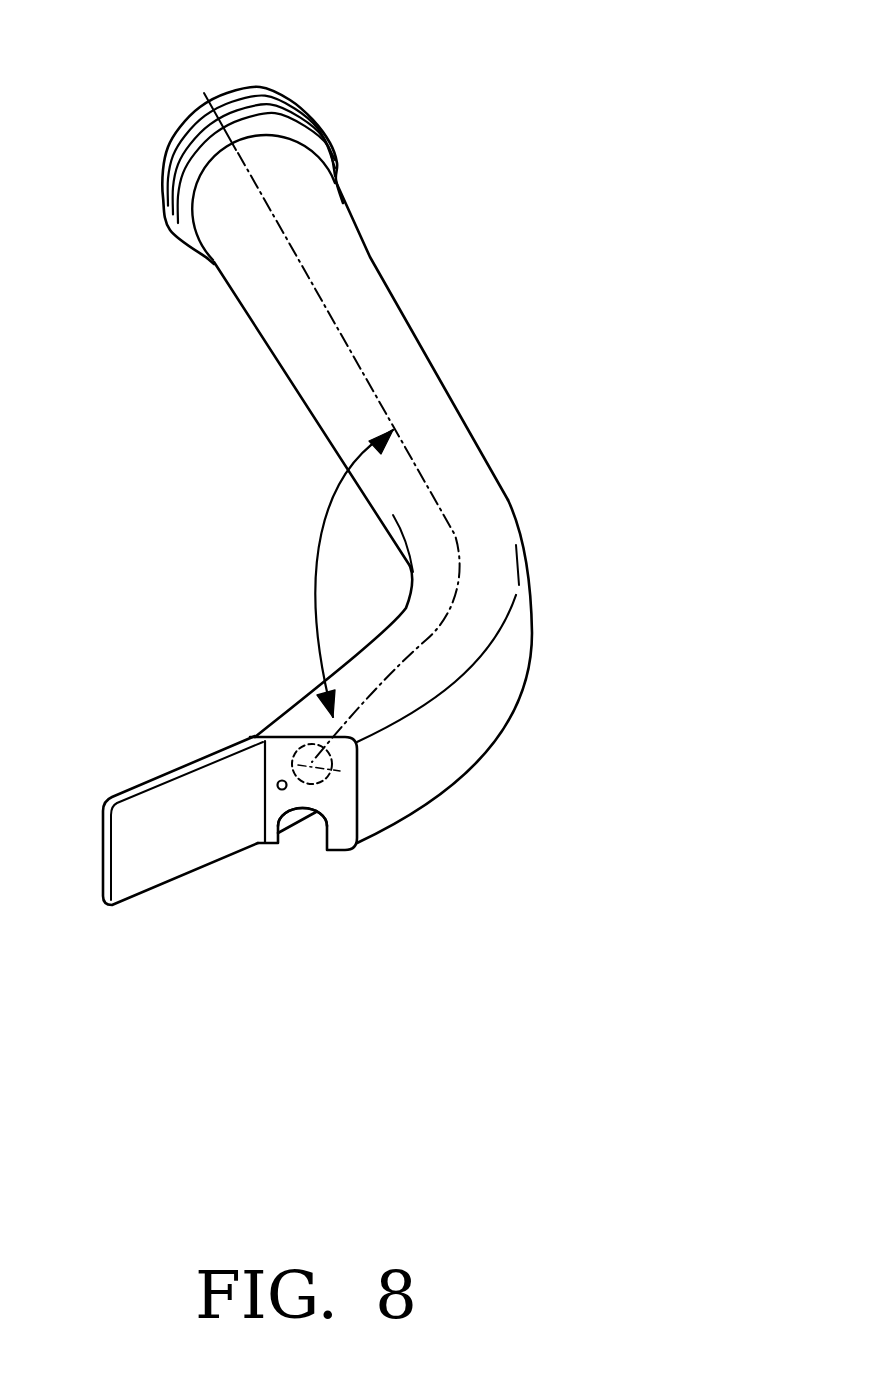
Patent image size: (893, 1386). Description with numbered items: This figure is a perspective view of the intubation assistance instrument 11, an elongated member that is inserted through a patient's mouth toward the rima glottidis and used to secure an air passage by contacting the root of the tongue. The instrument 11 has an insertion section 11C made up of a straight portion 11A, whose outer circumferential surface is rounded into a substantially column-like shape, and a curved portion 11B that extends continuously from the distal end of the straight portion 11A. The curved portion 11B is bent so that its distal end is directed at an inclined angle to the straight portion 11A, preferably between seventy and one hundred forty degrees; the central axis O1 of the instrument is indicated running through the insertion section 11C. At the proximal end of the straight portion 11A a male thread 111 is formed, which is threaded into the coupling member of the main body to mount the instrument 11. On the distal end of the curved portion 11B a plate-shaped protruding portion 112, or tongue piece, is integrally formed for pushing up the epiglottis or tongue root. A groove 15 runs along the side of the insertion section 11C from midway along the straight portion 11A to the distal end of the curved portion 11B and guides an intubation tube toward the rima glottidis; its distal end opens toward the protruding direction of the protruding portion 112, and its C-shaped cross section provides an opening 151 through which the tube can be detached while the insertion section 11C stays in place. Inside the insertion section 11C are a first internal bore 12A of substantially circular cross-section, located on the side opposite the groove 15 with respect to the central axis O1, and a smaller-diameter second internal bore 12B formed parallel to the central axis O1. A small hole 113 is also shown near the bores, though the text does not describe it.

The intubation assistance instrument 11 is at (453, 434).
The male thread 111 is at (265, 90).
The straight portion 11A is at (390, 373).
The curved portion 11B is at (467, 623).
The insertion section 11C is at (506, 306).
The central axis of the intubation assistance instrument O1 is at (318, 287).
The protruding portion 112 is at (186, 835).
The small hole 113 is at (276, 785).
The first internal bore 12A is at (360, 770).
The second internal bore 12B is at (264, 760).
The groove 15 is at (291, 858).
The opening 151 is at (311, 832).